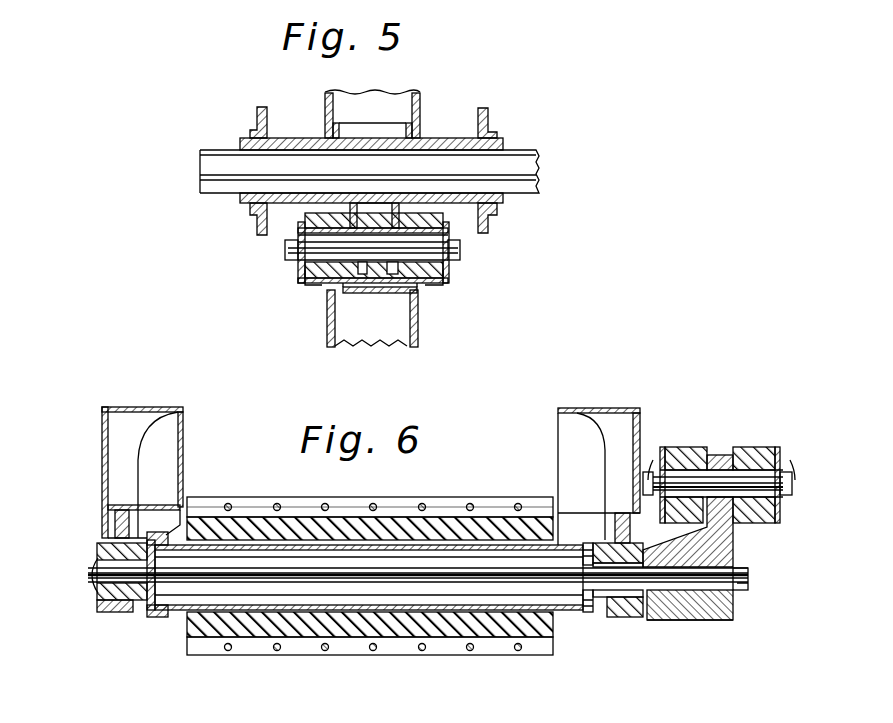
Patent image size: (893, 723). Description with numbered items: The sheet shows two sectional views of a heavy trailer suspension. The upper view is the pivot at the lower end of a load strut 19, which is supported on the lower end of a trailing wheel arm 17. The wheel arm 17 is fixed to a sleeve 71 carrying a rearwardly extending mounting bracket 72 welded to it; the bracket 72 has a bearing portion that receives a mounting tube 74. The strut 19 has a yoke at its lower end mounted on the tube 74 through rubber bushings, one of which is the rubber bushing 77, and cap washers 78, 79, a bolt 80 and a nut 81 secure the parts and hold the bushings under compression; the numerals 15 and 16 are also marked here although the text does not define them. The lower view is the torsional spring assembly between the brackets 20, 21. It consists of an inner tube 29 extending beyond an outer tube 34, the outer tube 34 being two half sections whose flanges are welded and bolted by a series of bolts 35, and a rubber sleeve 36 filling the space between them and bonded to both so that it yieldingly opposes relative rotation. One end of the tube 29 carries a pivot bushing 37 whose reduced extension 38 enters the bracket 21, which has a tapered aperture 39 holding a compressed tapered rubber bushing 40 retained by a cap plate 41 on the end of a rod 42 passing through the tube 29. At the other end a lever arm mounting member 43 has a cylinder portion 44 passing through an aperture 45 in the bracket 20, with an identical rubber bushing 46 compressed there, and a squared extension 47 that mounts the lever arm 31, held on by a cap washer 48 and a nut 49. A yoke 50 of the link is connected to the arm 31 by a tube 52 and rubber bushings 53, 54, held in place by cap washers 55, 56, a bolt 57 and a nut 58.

In FIG. 5, the bearing housing 15 is at (322, 285).
In FIG. 5, the housing lower part 16 is at (307, 283).
In FIG. 5, the trailing wheel arm 17 is at (324, 100).
In FIG. 5, the load strut 19 is at (418, 335).
In FIG. 6, the bracket 20 is at (567, 457).
In FIG. 6, the bracket 21 is at (175, 456).
In FIG. 6, the inner tube 29 is at (567, 613).
In FIG. 6, the lever arm 31 is at (727, 537).
In FIG. 6, the outer tube 34 is at (392, 648).
In FIG. 6, the bolts 35 is at (470, 650).
In FIG. 6, the rubber sleeve 36 is at (316, 620).
In FIG. 6, the pivot bushing 37 is at (150, 618).
In FIG. 6, the reduced extension 38 is at (97, 593).
In FIG. 6, the tapered aperture 39 is at (120, 605).
In FIG. 6, the tapered rubber bushing 40 is at (100, 607).
In FIG. 6, the cap plate 41 is at (95, 557).
In FIG. 6, the rod 42 is at (90, 574).
In FIG. 6, the lever arm mounting member 43 is at (598, 612).
In FIG. 6, the cylinder portion 44 is at (615, 613).
In FIG. 6, the aperture 45 is at (627, 613).
In FIG. 6, the rubber bushing 46 is at (642, 615).
In FIG. 6, the squared extension 47 is at (720, 620).
In FIG. 6, the cap washer 48 is at (735, 600).
In FIG. 6, the nut 49 is at (752, 590).
In FIG. 6, the yoke 50 is at (730, 447).
In FIG. 6, the tube 52 is at (697, 457).
In FIG. 6, the rubber bushing 53 is at (677, 460).
In FIG. 6, the rubber bushing 54 is at (757, 450).
In FIG. 6, the cap washer 55 is at (660, 460).
In FIG. 6, the cap washer 56 is at (775, 450).
In FIG. 6, the bolt 57 is at (797, 465).
In FIG. 6, the nut 58 is at (645, 463).
In FIG. 5, the sleeve 71 is at (440, 138).
In FIG. 5, the mounting bracket 72 is at (404, 205).
In FIG. 5, the mounting tube 74 is at (375, 258).
In FIG. 5, the rubber bushing 77 is at (437, 278).
In FIG. 5, the cap washer 78 is at (300, 268).
In FIG. 5, the cap washer 79 is at (449, 275).
In FIG. 5, the bolt 80 is at (287, 252).
In FIG. 5, the nut 81 is at (455, 260).